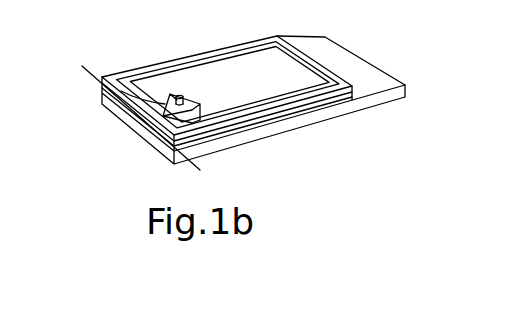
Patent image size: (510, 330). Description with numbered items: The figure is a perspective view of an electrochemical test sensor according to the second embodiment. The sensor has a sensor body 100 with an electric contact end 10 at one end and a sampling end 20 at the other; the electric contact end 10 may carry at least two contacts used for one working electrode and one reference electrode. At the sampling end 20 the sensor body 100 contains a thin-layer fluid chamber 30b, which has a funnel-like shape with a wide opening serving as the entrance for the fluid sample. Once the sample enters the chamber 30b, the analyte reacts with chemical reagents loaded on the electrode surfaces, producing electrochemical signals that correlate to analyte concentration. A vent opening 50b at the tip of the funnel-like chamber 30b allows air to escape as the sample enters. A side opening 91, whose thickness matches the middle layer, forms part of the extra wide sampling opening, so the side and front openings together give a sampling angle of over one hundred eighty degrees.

The sensor body 100 is at (150, 53).
The electric contact end 10 is at (347, 59).
The sampling end 20 is at (88, 113).
The thin-layer fluid chamber 30b is at (147, 120).
The vent opening 50b is at (178, 92).
The side opening 91 is at (142, 120).